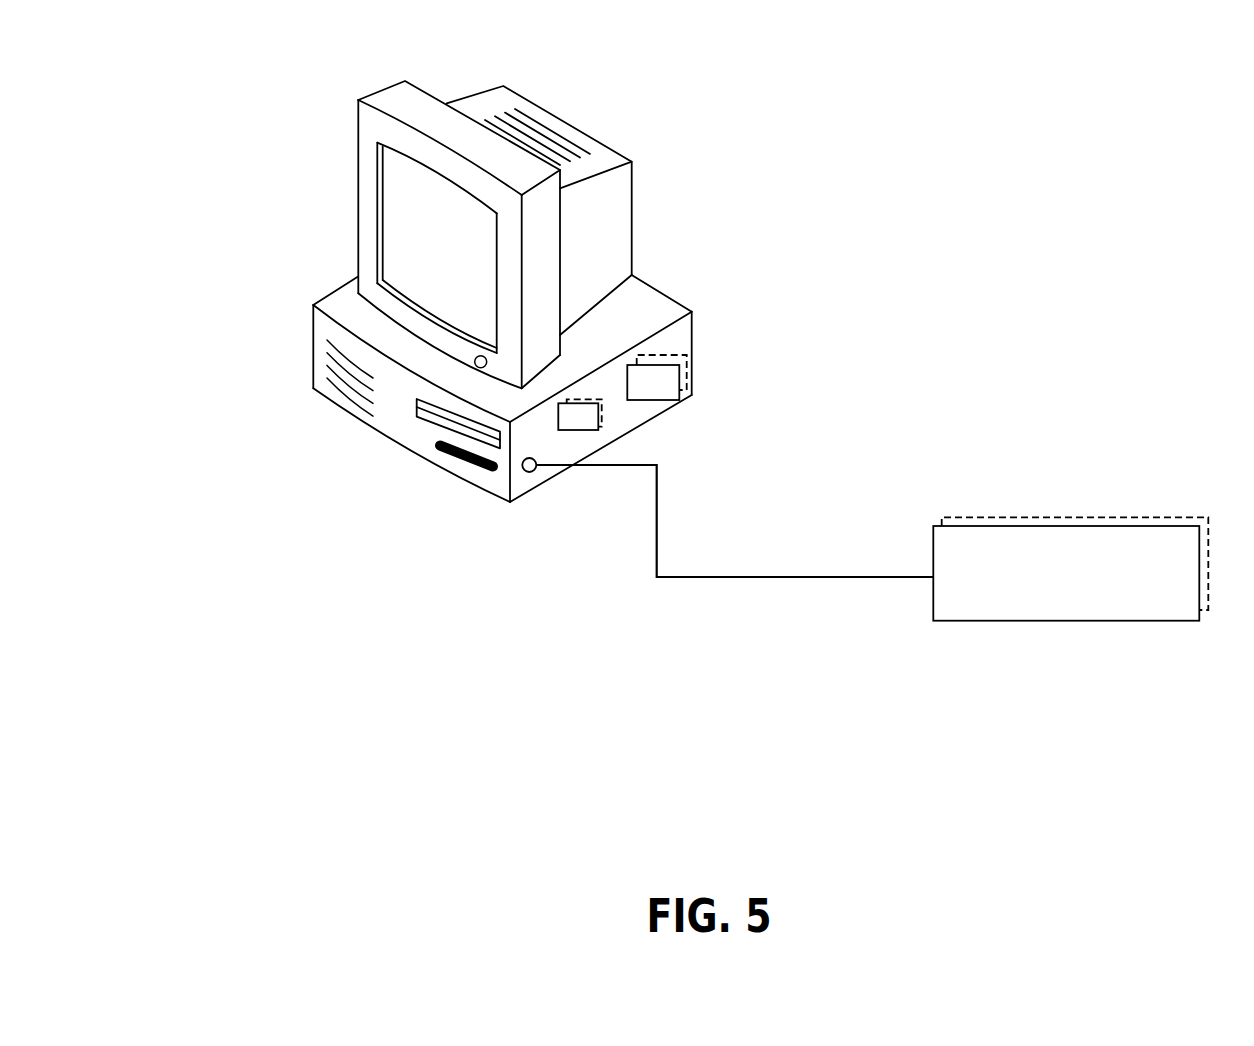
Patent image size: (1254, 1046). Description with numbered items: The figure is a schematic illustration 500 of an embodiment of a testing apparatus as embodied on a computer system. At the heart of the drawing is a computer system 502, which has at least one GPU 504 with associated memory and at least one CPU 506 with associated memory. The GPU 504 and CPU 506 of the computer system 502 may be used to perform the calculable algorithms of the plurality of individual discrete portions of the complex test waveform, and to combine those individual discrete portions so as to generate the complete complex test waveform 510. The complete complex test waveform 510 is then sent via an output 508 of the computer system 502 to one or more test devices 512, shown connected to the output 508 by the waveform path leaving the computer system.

The schematic illustration 500 is at (158, 805).
The computer system 502 is at (340, 287).
The GPU 504 is at (662, 352).
The CPU 506 is at (605, 417).
The output 508 is at (528, 474).
The complex test waveform 510 is at (760, 585).
The test devices 512 is at (1072, 510).